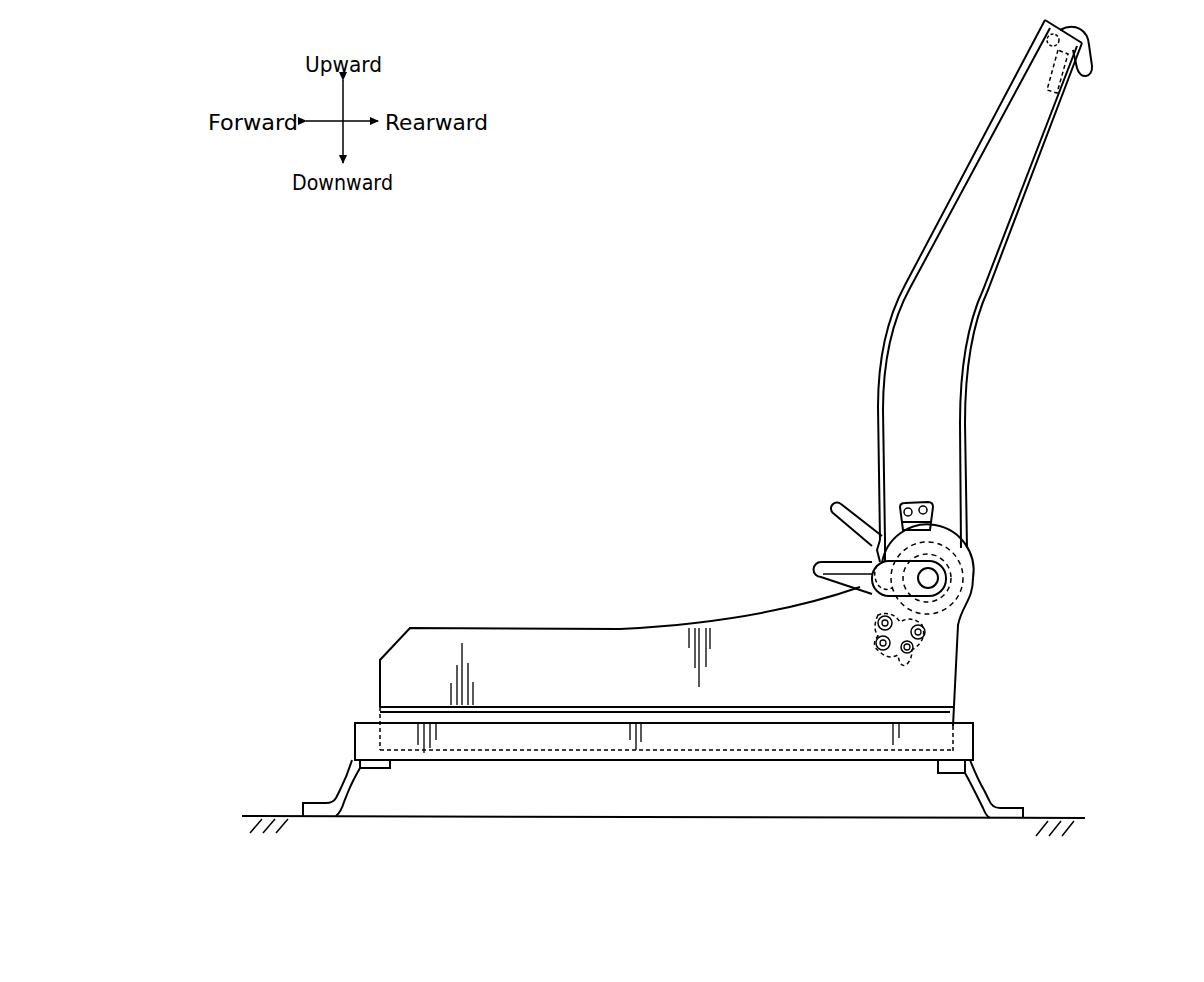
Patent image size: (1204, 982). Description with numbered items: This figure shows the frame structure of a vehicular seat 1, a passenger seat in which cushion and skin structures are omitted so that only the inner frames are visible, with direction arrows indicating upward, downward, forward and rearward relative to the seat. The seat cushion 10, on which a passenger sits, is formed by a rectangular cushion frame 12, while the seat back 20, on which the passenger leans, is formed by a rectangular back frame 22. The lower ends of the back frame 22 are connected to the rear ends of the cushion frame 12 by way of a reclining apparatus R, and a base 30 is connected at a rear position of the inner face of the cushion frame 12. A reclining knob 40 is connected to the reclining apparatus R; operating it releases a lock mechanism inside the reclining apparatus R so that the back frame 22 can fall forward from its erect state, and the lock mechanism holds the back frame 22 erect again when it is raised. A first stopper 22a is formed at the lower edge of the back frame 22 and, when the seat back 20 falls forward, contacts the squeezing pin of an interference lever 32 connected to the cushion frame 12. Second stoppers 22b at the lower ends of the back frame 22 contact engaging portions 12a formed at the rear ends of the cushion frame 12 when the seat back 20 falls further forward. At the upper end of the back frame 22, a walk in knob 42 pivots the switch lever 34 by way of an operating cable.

The vehicular seat 1 is at (607, 397).
The seat cushion 10 is at (658, 561).
The cushion frame 12 is at (607, 648).
The engaging portion 12a is at (907, 590).
The seat back 20 is at (915, 192).
The back frame 22 is at (948, 283).
The first stopper 22a is at (858, 540).
The second stopper 22b is at (922, 503).
The base 30 is at (927, 637).
The interference lever 32 is at (875, 627).
The switch lever 34 is at (910, 653).
The reclining knob 40 is at (835, 565).
The walk in knob 42 is at (1067, 82).
The reclining apparatus R is at (960, 545).